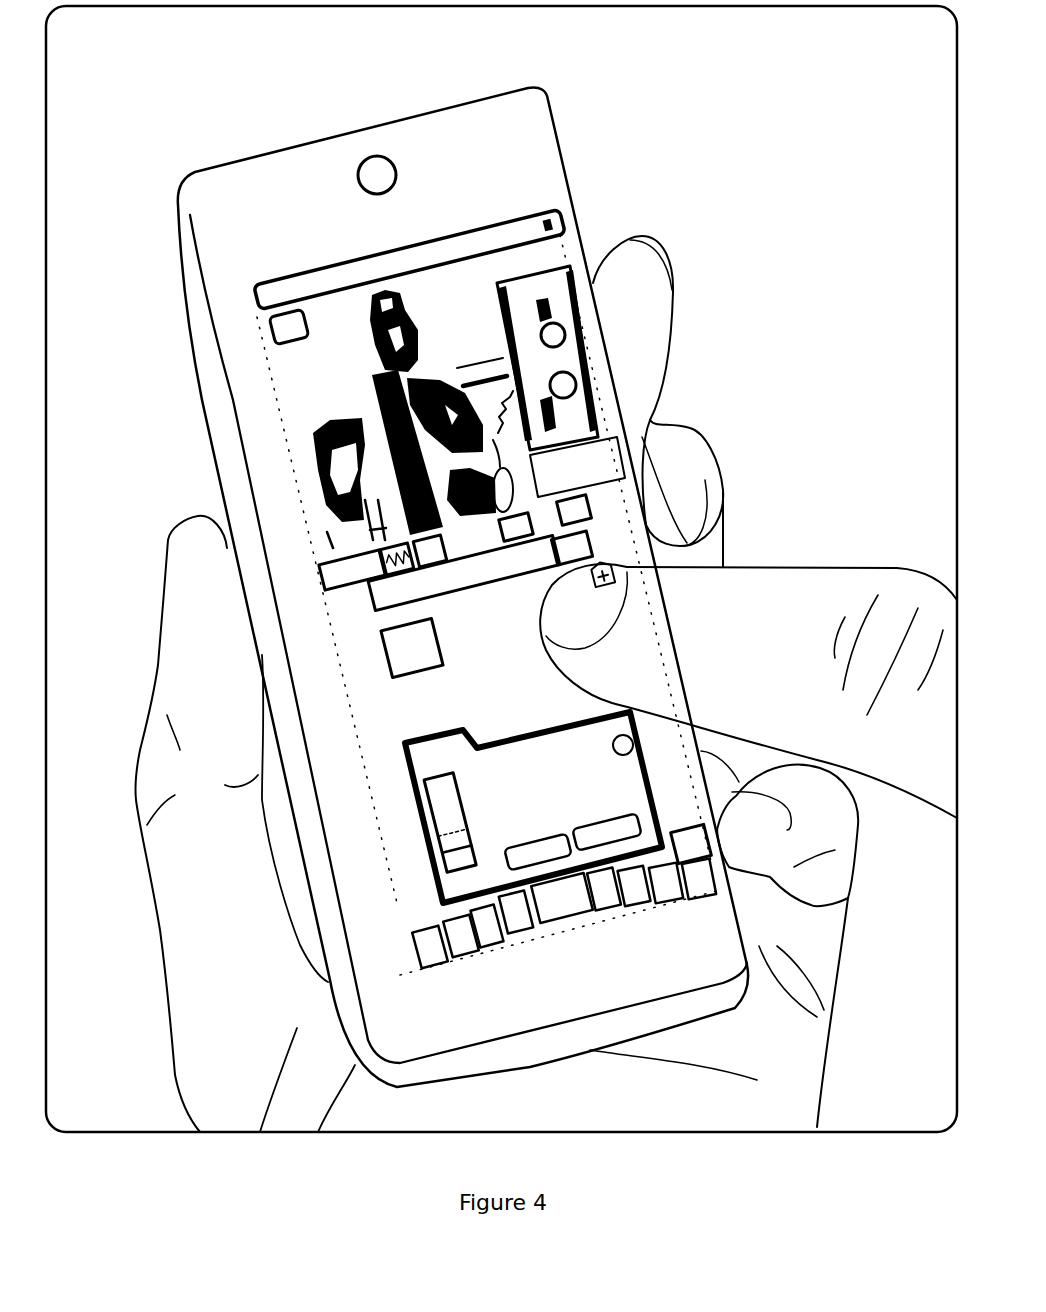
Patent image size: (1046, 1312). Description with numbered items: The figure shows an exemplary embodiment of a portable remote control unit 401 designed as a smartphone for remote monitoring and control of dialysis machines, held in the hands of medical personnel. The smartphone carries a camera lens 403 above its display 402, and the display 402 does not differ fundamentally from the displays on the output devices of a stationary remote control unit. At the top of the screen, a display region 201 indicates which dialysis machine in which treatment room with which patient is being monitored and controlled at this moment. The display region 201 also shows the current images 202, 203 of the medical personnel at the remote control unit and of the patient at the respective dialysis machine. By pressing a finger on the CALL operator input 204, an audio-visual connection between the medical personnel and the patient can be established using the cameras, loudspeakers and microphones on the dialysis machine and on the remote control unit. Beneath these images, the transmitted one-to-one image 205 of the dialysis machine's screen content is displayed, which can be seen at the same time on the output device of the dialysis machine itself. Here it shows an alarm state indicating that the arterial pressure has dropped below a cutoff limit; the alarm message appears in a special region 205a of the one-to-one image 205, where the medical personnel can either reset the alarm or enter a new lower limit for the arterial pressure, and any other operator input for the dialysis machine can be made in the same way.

The portable remote control unit 401 is at (592, 152).
The display 402 is at (242, 361).
The camera lens 403 is at (355, 170).
The display region 201 is at (257, 299).
The current image 202 is at (305, 423).
The current image 203 is at (475, 278).
The operator input 204 is at (270, 337).
The one-to-one image 205 is at (318, 565).
The special region 205a is at (403, 740).